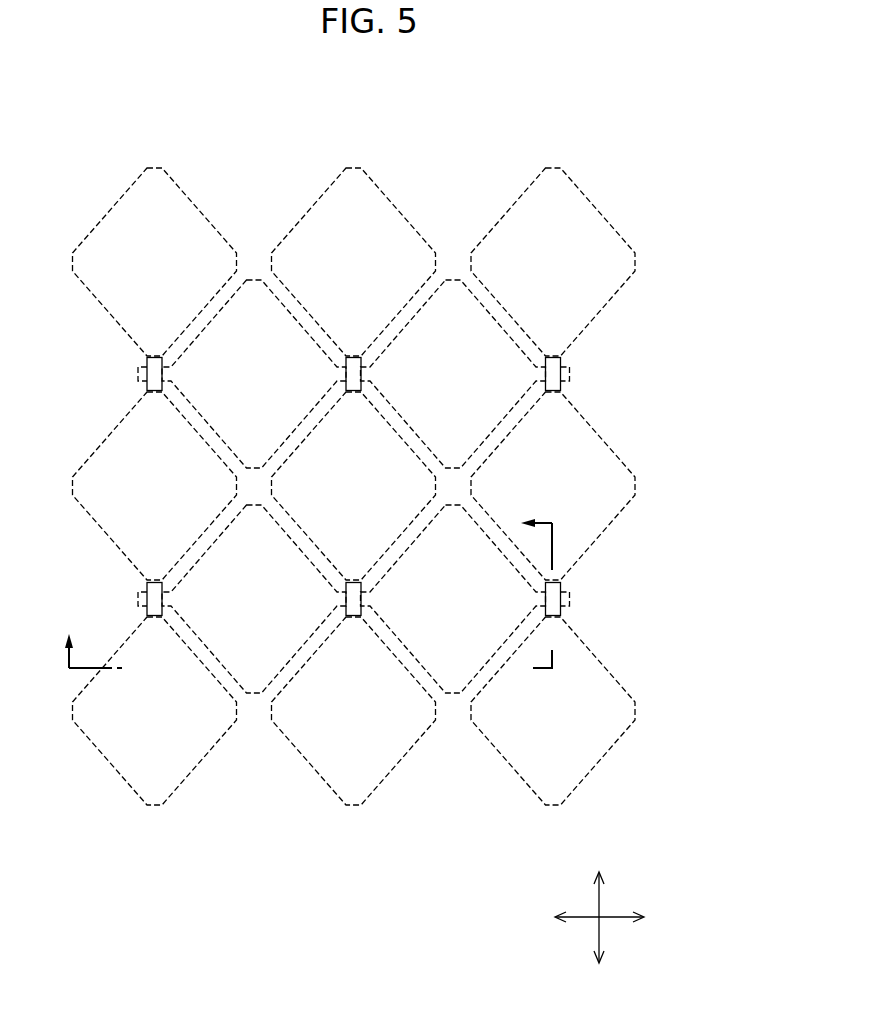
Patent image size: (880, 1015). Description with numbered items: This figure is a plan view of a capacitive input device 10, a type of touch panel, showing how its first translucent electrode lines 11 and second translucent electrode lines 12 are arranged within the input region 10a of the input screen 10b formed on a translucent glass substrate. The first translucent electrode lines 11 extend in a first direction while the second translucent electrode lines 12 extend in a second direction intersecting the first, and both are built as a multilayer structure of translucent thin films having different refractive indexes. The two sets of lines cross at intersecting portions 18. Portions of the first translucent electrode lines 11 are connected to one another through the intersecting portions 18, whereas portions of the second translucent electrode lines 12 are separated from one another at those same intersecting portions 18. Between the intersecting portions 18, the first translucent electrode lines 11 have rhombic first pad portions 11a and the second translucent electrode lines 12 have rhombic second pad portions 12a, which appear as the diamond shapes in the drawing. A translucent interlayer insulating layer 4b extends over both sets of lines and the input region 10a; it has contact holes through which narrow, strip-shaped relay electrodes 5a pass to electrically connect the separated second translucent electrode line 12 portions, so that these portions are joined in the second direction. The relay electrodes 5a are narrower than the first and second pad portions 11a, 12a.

The capacitive input device 10 is at (325, 110).
The input region 10a is at (370, 110).
The input screen 10b is at (413, 110).
The second translucent electrode line 12 is at (188, 198).
The second pad portion 12a is at (171, 492).
The first pad portion 11a is at (275, 380).
The first translucent electrode line 11 is at (197, 408).
The interlayer insulating layer 4b is at (657, 380).
The relay electrode 5a is at (362, 598).
The intersecting portion 18 is at (352, 564).